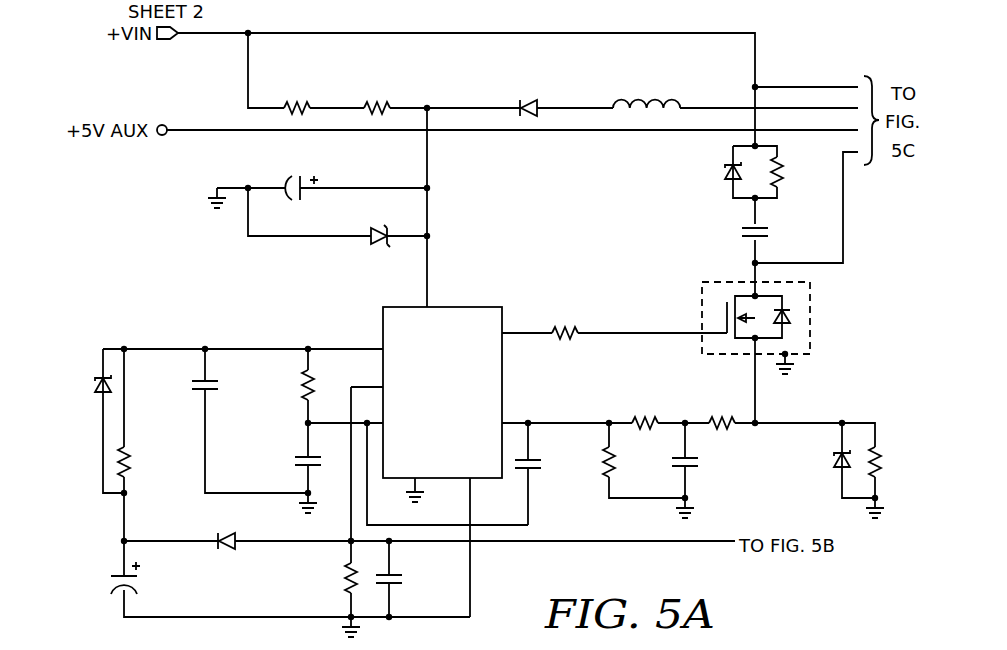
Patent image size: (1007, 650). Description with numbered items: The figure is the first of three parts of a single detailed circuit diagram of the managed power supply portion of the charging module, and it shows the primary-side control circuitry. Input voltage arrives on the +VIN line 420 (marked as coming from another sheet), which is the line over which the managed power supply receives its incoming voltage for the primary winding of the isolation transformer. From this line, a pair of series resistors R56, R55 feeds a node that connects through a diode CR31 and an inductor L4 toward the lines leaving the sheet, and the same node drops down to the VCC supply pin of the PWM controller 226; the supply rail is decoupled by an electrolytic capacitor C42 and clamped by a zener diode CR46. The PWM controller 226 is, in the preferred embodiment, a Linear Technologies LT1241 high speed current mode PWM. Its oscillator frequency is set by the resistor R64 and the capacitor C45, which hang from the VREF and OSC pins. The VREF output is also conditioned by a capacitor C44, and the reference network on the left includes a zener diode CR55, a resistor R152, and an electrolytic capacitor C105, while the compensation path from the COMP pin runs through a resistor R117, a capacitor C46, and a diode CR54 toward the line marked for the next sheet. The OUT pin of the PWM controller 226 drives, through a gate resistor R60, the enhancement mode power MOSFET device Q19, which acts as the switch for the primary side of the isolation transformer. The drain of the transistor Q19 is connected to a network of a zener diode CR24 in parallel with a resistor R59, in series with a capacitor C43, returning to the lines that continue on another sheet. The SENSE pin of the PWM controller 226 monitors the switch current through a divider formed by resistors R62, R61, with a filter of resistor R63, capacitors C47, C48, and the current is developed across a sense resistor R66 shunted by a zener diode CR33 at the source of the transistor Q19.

The line 420 is at (166, 45).
The PWM controller 226 is at (459, 306).
The resistor R56 100K R56 is at (299, 84).
The resistor R55 100K R55 is at (379, 84).
The diode CR31 SYV26A CR31 is at (529, 83).
The inductor L4 100uH L4 is at (641, 88).
The capacitor C42 100UF C42 is at (293, 191).
The zener diode CR46 is at (374, 226).
The zener diode CR24 is at (704, 173).
The resistor R59 430 R59 is at (796, 176).
The capacitor C43 220PF C43 is at (786, 234).
The enhancement mode power MOSFET device Q19 is at (778, 328).
The resistor R60 20 ohm 1/2W R60 is at (561, 326).
The zener diode CR55 is at (74, 387).
The resistor R152 1M R152 is at (149, 464).
The capacitor C105 10UF C105 is at (99, 581).
The capacitor C44 .1UF C44 is at (181, 391).
The resistor R64 is at (284, 389).
The capacitor C45 is at (270, 461).
The resistor R117 20K R117 is at (324, 578).
The diode CR54 1N914B CR54 is at (224, 545).
The capacitor C46 .22UF C46 is at (415, 578).
The capacitor C47 22PF C47 is at (551, 468).
The resistor R62 10K R62 is at (644, 401).
The resistor R61 1K R61 is at (720, 401).
The resistor R63 51K R63 is at (628, 468).
The capacitor C48 100PF C48 is at (713, 468).
The zener diode CR33 is at (812, 463).
The resistor R66 .47 R66 is at (893, 468).